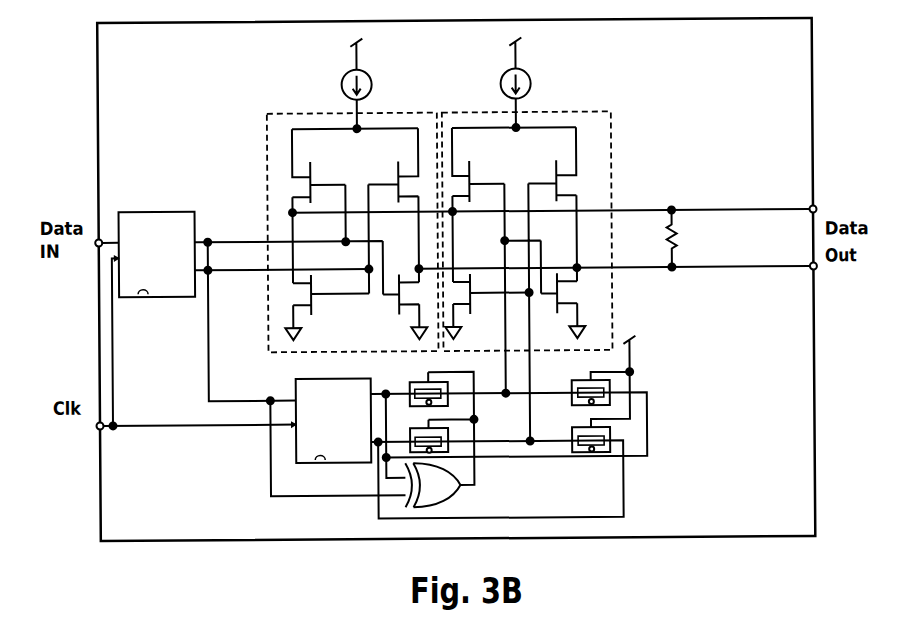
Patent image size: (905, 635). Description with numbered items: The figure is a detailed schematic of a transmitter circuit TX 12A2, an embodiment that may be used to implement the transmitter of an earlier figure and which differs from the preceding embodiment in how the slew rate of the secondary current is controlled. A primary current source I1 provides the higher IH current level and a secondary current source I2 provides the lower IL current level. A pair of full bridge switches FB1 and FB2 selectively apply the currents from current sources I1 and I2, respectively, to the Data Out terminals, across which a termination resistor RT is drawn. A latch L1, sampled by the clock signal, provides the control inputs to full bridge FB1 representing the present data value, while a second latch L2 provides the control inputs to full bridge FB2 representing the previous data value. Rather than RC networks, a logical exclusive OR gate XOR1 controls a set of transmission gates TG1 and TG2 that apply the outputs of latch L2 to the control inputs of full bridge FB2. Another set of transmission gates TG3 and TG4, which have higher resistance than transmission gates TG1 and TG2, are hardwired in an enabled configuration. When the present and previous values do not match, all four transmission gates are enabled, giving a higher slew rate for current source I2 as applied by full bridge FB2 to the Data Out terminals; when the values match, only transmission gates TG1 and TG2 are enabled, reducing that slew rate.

The transmitter circuit 12A2 is at (184, 50).
The latch L1 is at (165, 263).
The second latch L2 is at (345, 428).
The primary current source I1 is at (367, 83).
The secondary current source I2 is at (526, 82).
The full bridge switch FB1 is at (372, 162).
The full bridge switch FB2 is at (534, 162).
The termination resistor RT is at (685, 238).
The logical exclusive OR gate XOR1 is at (455, 442).
The transmission gate TG1 is at (420, 384).
The transmission gate TG2 is at (420, 432).
The transmission gate TG3 is at (593, 382).
The transmission gate TG4 is at (578, 430).